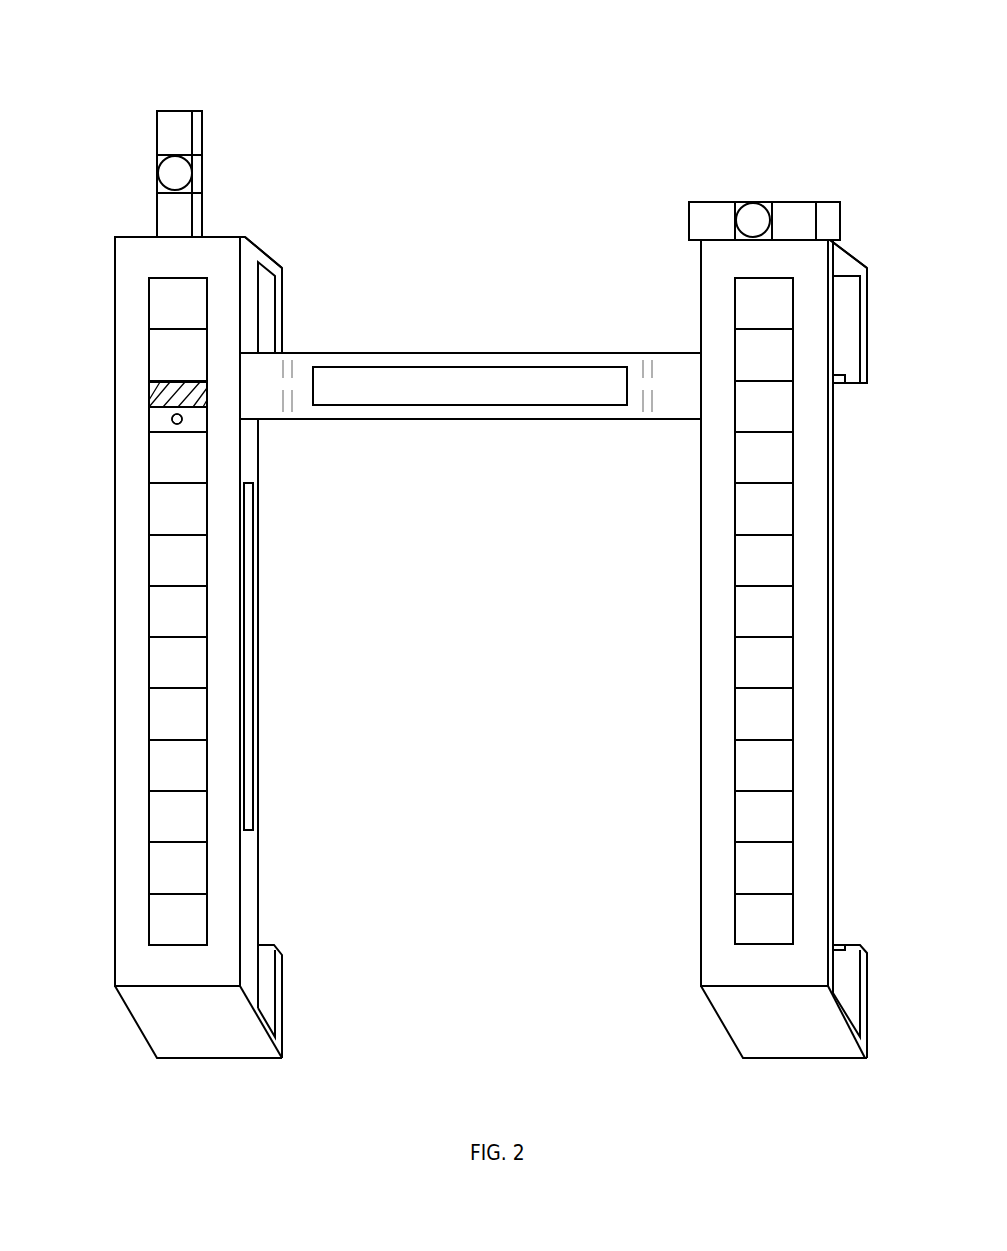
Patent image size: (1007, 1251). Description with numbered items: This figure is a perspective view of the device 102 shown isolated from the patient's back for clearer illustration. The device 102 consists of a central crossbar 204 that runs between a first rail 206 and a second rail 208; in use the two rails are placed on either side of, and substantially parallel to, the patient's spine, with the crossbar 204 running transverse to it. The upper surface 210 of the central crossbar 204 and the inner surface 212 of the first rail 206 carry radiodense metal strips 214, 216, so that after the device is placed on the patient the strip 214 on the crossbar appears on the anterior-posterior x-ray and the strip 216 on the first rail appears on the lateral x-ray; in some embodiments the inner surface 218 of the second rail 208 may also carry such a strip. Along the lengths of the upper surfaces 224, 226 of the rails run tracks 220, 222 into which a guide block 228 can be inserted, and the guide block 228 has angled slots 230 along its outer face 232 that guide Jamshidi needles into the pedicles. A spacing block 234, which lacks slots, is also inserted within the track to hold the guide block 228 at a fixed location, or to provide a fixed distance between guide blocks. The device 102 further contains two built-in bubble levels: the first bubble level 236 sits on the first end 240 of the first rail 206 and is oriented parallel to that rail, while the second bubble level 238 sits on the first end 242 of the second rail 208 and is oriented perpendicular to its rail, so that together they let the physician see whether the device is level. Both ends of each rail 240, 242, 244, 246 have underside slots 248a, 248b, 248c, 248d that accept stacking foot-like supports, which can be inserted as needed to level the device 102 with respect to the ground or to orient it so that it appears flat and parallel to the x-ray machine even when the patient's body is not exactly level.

The device 102 is at (105, 83).
The central crossbar 204 is at (675, 378).
The first rail 206 is at (212, 257).
The second rail 208 is at (810, 520).
The upper surface of the central crossbar 210 is at (640, 410).
The inner surface of the first rail 212 is at (250, 890).
The metal strip 214 is at (392, 375).
The metal strip 216 is at (250, 662).
The inner surface of the second rail 218 is at (700, 920).
The track 220 is at (148, 600).
The track 222 is at (780, 672).
The upper surface of the first rail 224 is at (130, 738).
The upper surface of the second rail 226 is at (810, 767).
The guide block 228 is at (195, 420).
The angled slot 230 is at (172, 425).
The outer face 232 is at (150, 420).
The spacing block 234 is at (150, 393).
The first bubble level 236 is at (165, 138).
The second bubble level 238 is at (818, 202).
The first end of the first rail 240 is at (125, 237).
The first end of the second rail 242 is at (815, 255).
The second end of the first rail 244 is at (165, 990).
The second end of the second rail 246 is at (740, 990).
The underside slot 248a is at (268, 300).
The underside slot 248b is at (852, 317).
The underside slot 248c is at (268, 985).
The underside slot 248d is at (850, 985).